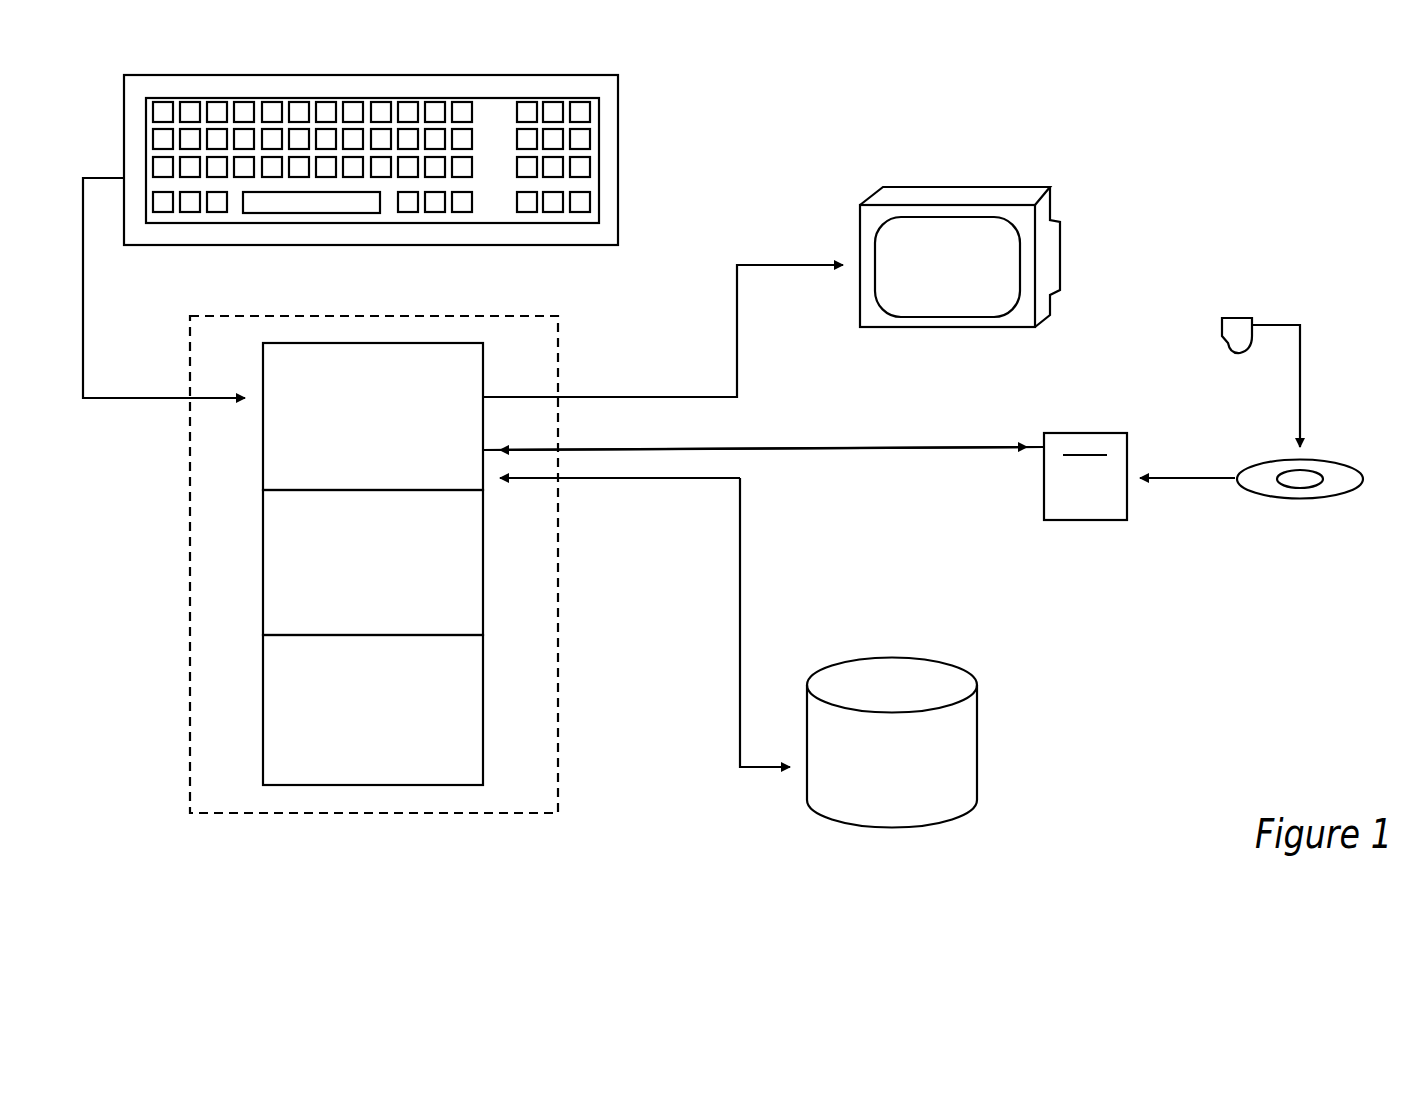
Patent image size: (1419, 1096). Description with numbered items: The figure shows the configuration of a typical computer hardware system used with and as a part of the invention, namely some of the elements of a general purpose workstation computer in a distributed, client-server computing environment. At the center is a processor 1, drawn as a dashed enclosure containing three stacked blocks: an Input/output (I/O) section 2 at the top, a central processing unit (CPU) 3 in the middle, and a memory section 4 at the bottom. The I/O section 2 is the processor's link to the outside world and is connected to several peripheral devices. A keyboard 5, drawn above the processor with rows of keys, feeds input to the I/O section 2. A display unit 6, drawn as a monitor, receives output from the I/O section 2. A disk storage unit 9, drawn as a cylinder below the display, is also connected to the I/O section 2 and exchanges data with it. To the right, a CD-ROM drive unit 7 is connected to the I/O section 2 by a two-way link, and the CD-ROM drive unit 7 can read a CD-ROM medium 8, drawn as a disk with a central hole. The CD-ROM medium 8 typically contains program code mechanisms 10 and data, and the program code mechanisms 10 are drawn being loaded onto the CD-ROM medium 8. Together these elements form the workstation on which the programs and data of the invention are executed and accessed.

The processor 1 is at (411, 546).
The Input/output section 2 is at (416, 342).
The central processing unit 3 is at (483, 568).
The memory section 4 is at (483, 707).
The keyboard 5 is at (618, 142).
The display unit 6 is at (1053, 210).
The CD-ROM drive unit 7 is at (1128, 448).
The CD-ROM medium 8 is at (1330, 463).
The disk storage unit 9 is at (953, 663).
The program code mechanisms 10 is at (1232, 316).